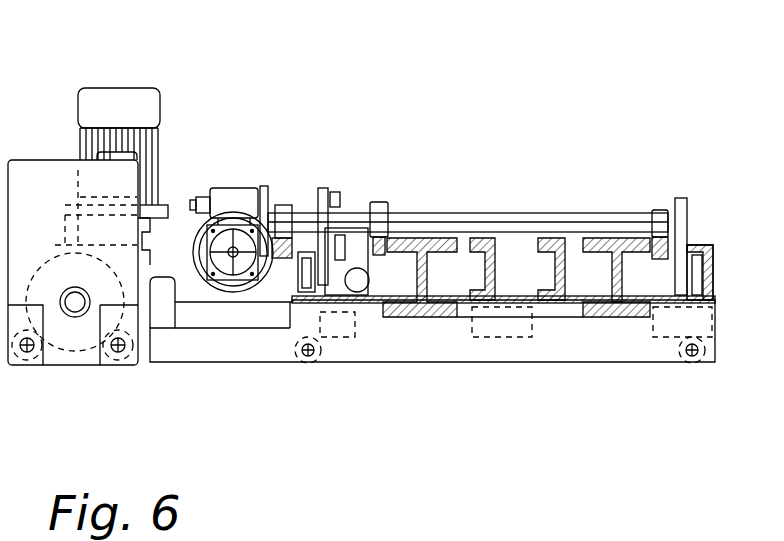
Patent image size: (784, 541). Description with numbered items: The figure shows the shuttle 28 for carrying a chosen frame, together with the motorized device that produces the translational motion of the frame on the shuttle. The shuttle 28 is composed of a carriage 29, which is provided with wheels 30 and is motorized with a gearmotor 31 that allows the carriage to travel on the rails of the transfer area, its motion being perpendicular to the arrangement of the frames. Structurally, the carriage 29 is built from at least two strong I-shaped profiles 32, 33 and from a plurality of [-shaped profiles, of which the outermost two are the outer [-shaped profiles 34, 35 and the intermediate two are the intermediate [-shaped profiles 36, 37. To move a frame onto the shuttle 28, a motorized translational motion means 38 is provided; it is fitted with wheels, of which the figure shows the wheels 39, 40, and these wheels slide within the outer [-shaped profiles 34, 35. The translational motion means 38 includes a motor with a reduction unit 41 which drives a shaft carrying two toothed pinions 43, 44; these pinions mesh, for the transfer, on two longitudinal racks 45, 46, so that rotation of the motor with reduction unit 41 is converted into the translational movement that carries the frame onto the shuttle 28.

The shuttle 28 is at (460, 181).
The carriage 29 is at (452, 334).
The wheels 30 is at (308, 360).
The gearmotor 31 is at (10, 70).
The I-shaped profile 32 is at (432, 212).
The I-shaped profile 33 is at (608, 238).
The outer [-shaped profile 34 is at (710, 243).
The outer [-shaped profile 35 is at (292, 258).
The intermediate [-shaped profile 36 is at (490, 238).
The intermediate [-shaped profile 37 is at (558, 238).
The motorized translational motion means 38 is at (302, 188).
The wheel 39 is at (700, 270).
The wheel 40 is at (296, 272).
The motor with reduction unit 41 is at (233, 178).
The toothed pinion 43 is at (660, 208).
The toothed pinion 44 is at (378, 201).
The longitudinal rack 45 is at (647, 250).
The longitudinal rack 46 is at (385, 254).